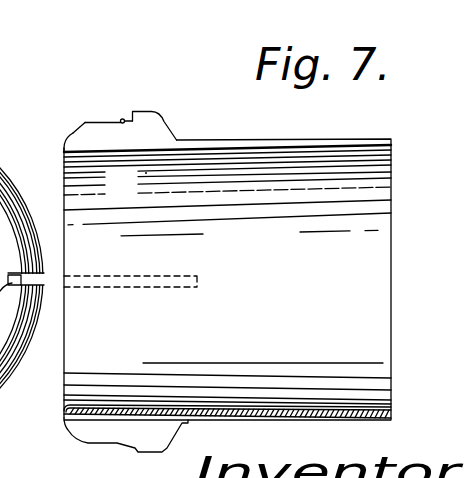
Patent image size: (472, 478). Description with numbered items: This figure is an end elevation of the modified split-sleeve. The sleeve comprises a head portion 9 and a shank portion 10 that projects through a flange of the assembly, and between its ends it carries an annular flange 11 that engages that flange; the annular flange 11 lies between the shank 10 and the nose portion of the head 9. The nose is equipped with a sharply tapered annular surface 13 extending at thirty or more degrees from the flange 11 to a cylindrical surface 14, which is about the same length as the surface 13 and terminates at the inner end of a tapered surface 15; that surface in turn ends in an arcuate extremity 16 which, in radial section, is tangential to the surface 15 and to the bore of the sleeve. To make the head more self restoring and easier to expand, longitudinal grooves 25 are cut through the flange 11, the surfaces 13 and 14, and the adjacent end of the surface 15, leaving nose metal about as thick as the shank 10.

The head portion 9 is at (128, 143).
The shank portion 10 is at (293, 138).
The annular flange 11 is at (159, 122).
The tapered annular surface 13 is at (124, 118).
The cylindrical surface 14 is at (97, 121).
The tapered surface 15 is at (77, 133).
The arcuate extremity 16 is at (62, 147).
The longitudinal grooves 25 is at (152, 288).